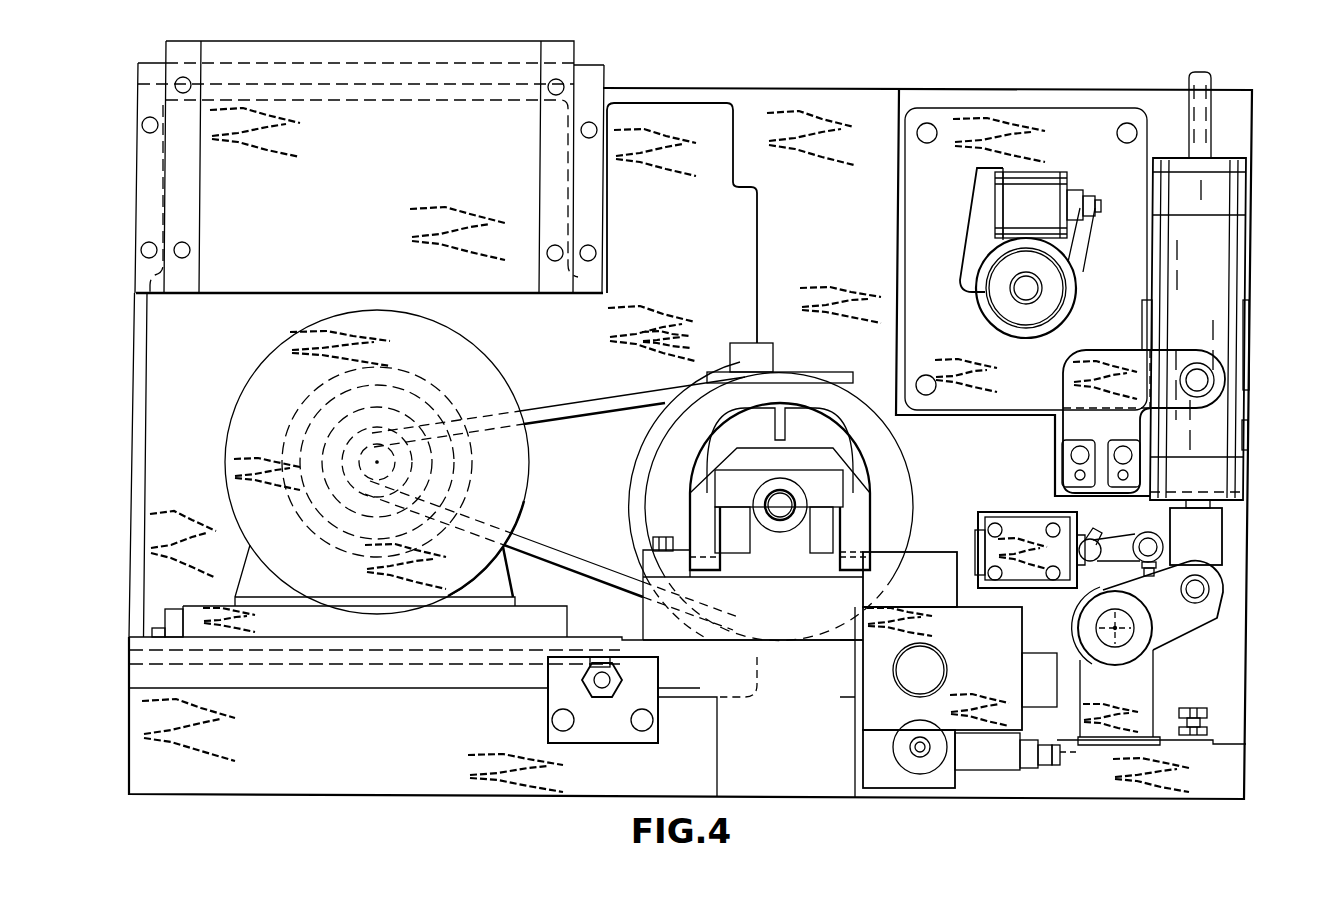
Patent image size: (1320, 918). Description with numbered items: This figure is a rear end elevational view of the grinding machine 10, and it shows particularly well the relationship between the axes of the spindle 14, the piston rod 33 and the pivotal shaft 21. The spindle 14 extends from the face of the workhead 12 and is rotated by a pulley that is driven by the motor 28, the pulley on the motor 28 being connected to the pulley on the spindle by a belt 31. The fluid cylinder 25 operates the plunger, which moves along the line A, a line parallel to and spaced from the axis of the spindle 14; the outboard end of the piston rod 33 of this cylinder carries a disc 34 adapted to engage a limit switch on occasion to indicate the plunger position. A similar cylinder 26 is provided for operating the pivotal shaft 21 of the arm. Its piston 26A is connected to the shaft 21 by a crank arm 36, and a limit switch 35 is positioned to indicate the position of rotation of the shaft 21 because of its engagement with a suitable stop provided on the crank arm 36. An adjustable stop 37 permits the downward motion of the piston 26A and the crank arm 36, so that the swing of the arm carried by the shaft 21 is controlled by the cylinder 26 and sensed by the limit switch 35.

The grinding machine 10 is at (1045, 90).
The workhead 12 is at (815, 100).
The spindle 14 is at (772, 510).
The pivot shaft 21 is at (1127, 640).
The fluid cylinder 25 is at (980, 297).
The cylinder 26 is at (1237, 320).
The piston 26A is at (1213, 540).
The motor 28 is at (250, 385).
The belt 31 is at (582, 400).
The piston rod 33 is at (1020, 296).
The disc 34 is at (1033, 315).
The limit switch 35 is at (1008, 527).
The crank arm 36 is at (1187, 615).
The adjustable stop 37 is at (1200, 708).
The line A is at (1120, 623).